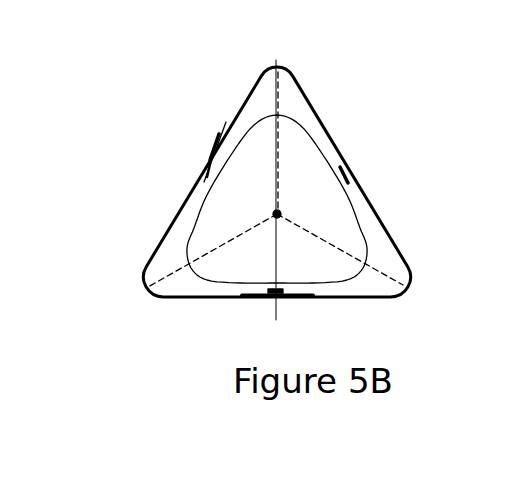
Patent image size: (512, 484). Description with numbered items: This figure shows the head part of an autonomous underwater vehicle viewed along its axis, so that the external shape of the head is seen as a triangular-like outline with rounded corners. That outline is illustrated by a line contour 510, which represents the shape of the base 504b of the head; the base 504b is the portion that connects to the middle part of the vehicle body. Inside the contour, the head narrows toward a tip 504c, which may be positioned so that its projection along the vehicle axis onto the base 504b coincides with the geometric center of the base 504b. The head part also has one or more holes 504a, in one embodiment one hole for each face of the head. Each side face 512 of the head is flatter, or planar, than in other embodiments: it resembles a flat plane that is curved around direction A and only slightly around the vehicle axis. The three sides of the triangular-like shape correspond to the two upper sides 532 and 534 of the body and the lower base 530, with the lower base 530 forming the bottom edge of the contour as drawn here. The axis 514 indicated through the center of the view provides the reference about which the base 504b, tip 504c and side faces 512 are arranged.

The line contour 510 is at (244, 99).
The side face 512 is at (257, 166).
The central axis 514 is at (278, 152).
The hole 504a is at (209, 172).
The base 504b is at (242, 102).
The tip 504c is at (277, 214).
The upper side 532 is at (206, 148).
The upper side 534 is at (384, 202).
The lower base 530 is at (337, 301).
The direction A is at (168, 307).